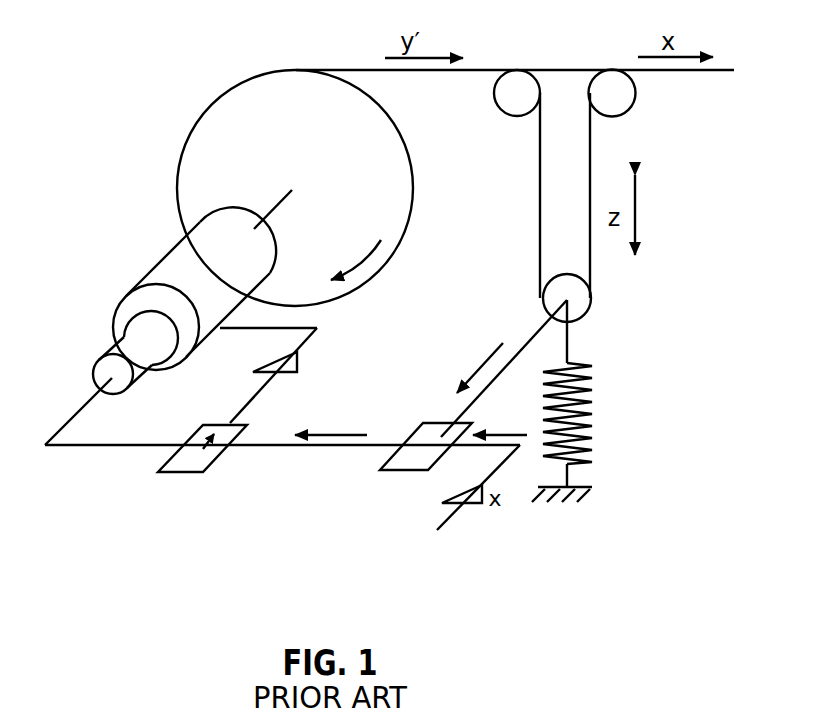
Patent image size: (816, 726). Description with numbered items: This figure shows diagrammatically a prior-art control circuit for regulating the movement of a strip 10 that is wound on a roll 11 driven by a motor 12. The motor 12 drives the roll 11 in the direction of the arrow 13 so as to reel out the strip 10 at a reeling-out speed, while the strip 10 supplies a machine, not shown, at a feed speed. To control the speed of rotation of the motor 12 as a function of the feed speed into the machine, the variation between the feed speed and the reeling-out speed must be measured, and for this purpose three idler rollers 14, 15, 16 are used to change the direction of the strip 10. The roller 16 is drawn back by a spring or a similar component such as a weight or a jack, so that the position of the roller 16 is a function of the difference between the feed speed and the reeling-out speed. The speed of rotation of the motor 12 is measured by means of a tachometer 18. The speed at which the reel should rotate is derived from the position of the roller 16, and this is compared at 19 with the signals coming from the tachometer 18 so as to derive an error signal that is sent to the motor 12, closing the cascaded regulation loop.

The strip 10 is at (346, 68).
The roll 11 is at (262, 137).
The motor 12 is at (198, 252).
The arrow 13 is at (355, 256).
The idler roller 14 is at (522, 92).
The idler roller 15 is at (607, 92).
The idler roller 16 is at (565, 288).
The tachometer 18 is at (122, 348).
The comparison point 19 is at (197, 453).